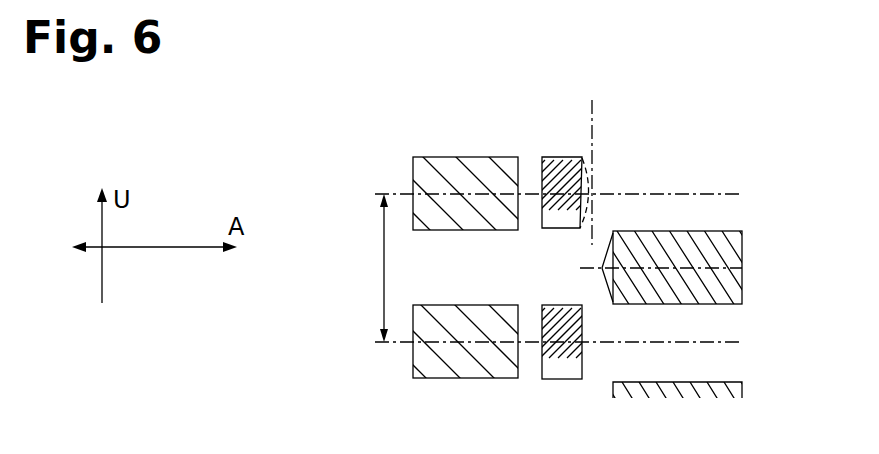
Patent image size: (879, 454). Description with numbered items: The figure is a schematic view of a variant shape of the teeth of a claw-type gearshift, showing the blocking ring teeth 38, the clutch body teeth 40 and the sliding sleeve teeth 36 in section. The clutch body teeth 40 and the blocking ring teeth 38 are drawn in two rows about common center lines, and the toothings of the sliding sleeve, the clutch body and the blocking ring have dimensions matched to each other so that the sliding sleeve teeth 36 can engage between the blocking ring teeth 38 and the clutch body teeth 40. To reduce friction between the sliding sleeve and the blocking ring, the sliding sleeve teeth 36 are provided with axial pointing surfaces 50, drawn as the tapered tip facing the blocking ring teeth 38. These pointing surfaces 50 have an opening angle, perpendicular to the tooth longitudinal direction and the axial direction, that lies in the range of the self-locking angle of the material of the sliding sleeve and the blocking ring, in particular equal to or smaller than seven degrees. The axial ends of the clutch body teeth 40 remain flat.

The sliding sleeve teeth 36 is at (720, 248).
The blocking ring teeth 38 is at (560, 168).
The clutch body teeth 40 is at (422, 173).
The axial pointing surfaces 50 is at (592, 177).